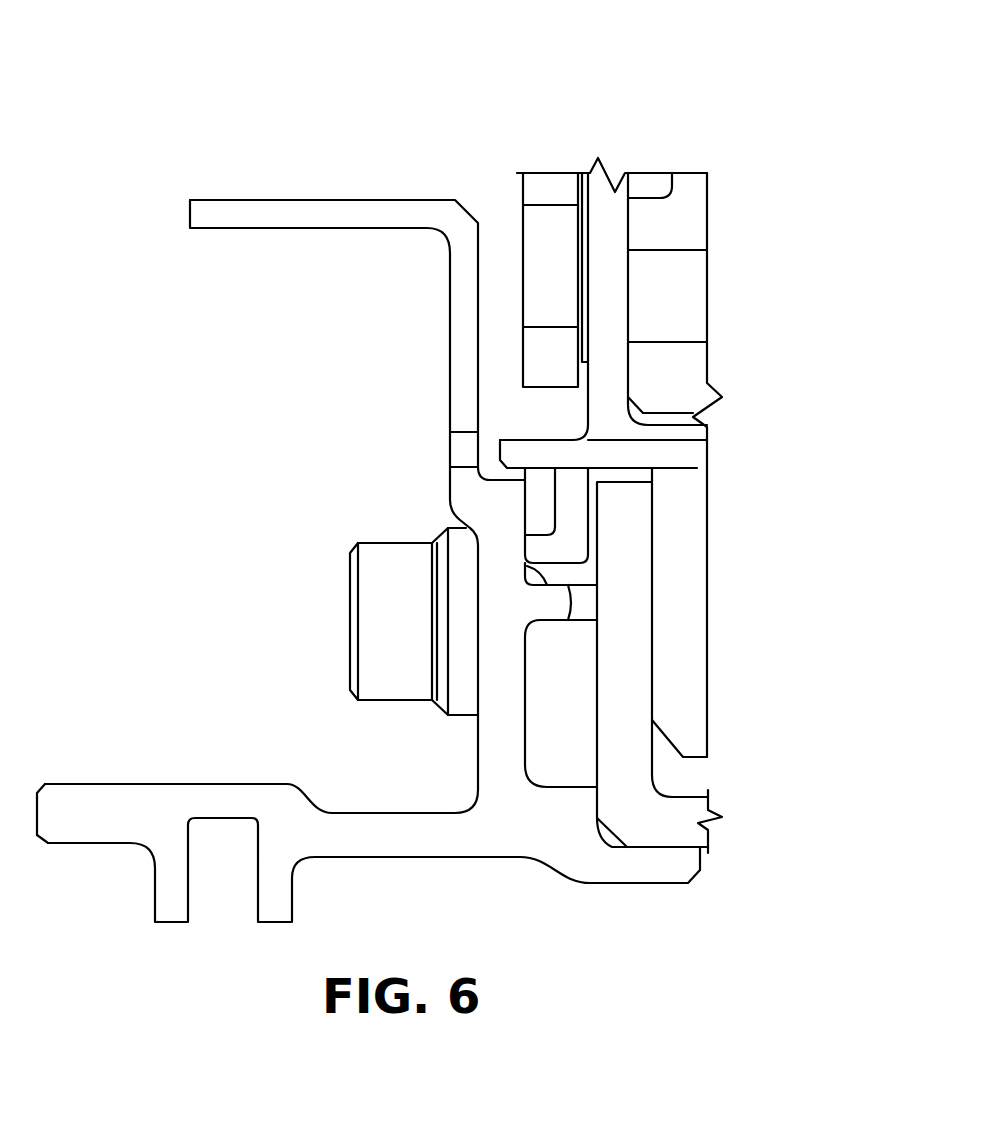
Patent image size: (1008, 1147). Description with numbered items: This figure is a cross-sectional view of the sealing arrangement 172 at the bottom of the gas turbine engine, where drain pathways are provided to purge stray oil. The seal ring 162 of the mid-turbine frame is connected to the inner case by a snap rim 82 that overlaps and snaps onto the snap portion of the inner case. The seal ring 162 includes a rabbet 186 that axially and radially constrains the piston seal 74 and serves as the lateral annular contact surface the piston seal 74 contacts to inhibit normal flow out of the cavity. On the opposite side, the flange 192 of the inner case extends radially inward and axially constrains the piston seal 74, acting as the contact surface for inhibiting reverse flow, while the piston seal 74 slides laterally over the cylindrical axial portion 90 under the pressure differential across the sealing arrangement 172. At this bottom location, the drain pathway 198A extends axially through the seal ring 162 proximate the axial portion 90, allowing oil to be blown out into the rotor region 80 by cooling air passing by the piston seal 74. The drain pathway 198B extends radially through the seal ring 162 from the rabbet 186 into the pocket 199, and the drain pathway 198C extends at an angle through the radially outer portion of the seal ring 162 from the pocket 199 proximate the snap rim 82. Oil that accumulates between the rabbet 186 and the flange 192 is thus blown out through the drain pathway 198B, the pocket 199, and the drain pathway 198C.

The rotor region 80 is at (137, 539).
The seal ring 162 is at (337, 858).
The snap rim 82 is at (636, 883).
The sealing arrangement 172 is at (645, 130).
The axial portion 90 is at (557, 438).
The drain pathway 198A is at (492, 448).
The piston seal 74 is at (523, 548).
The flange 192 is at (657, 562).
The drain pathway 198B is at (582, 573).
The rabbet 186 is at (547, 590).
The pocket 199 is at (527, 767).
The drain pathway 198C is at (580, 785).